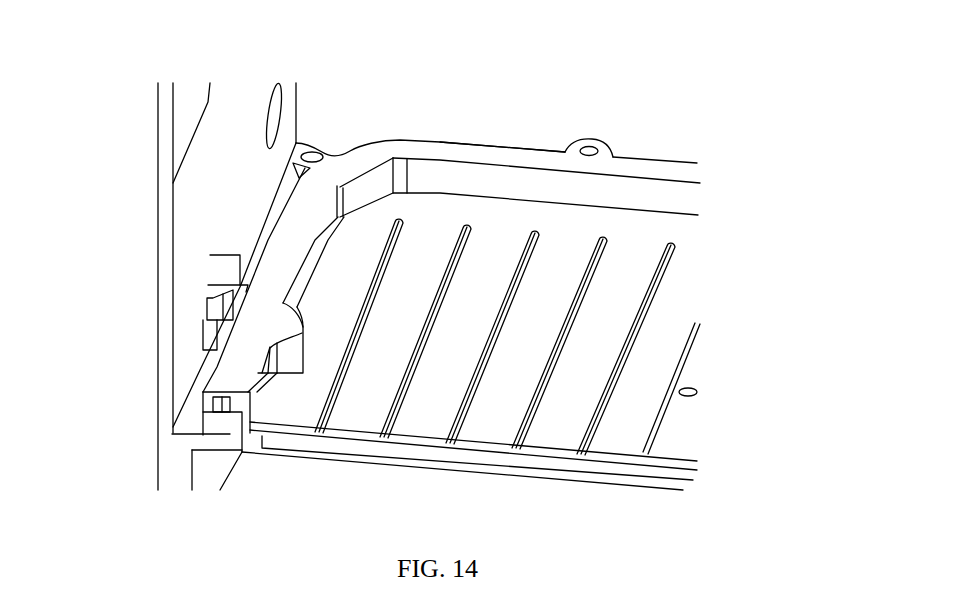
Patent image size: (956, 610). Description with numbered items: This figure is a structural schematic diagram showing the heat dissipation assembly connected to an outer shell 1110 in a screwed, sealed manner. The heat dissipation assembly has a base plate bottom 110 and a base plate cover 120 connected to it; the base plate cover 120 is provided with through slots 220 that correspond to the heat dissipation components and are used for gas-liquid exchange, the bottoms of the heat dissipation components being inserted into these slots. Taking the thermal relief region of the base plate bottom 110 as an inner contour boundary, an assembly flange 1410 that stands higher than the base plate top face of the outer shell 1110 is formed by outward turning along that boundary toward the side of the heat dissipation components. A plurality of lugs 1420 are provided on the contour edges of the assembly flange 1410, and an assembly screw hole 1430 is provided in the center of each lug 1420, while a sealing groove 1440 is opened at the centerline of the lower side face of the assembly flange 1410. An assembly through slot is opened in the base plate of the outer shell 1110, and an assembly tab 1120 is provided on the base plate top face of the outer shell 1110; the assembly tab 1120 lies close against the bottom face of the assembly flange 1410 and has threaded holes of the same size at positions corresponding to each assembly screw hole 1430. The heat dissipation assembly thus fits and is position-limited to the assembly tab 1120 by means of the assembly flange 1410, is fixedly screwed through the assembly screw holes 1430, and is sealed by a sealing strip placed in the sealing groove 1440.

The outer shell 1110 is at (150, 208).
The assembly tab 1120 is at (193, 445).
The assembly flange 1410 is at (682, 172).
The lug 1420 is at (620, 147).
The assembly screw hole 1430 is at (590, 147).
The sealing groove 1440 is at (215, 402).
The through slot 220 is at (672, 255).
The base plate cover 120 is at (660, 350).
The base plate bottom 110 is at (690, 483).